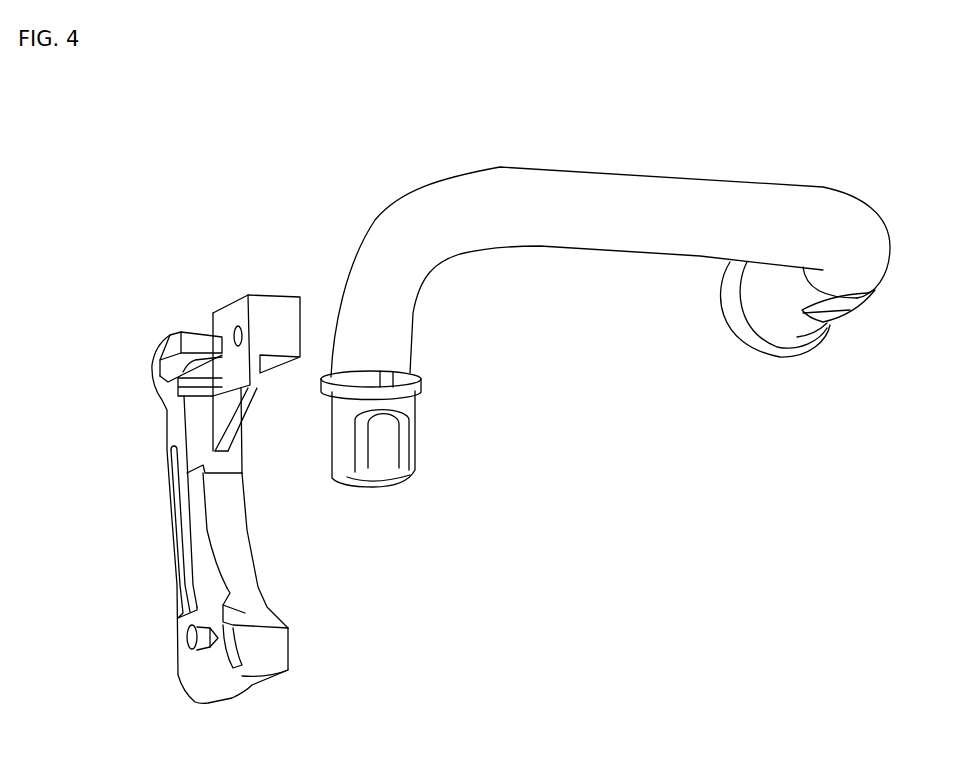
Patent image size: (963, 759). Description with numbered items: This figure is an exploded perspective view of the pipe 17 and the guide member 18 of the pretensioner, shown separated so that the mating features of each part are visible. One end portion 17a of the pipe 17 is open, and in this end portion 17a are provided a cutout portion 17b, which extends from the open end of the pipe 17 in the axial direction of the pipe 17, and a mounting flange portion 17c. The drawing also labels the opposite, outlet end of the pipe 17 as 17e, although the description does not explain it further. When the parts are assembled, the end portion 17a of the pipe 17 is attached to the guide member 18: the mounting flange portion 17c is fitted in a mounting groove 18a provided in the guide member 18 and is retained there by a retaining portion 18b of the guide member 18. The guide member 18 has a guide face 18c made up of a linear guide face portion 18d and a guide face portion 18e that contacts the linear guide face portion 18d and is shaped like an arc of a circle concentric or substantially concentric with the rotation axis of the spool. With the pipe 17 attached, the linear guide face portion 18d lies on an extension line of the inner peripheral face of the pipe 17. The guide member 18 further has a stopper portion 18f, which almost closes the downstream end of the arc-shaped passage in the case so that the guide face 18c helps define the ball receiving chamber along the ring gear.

The pipe 17 is at (575, 165).
The end portion 17a is at (338, 422).
The cutout portion 17b is at (403, 442).
The mounting flange portion 17c is at (413, 383).
The pipe outlet end 17e is at (770, 318).
The guide member 18 is at (163, 570).
The mounting groove 18a is at (178, 386).
The retaining portion 18b is at (200, 347).
The guide face 18c is at (344, 543).
The linear guide face portion 18d is at (232, 493).
The guide face portion 18e is at (241, 580).
The stopper portion 18f is at (266, 300).